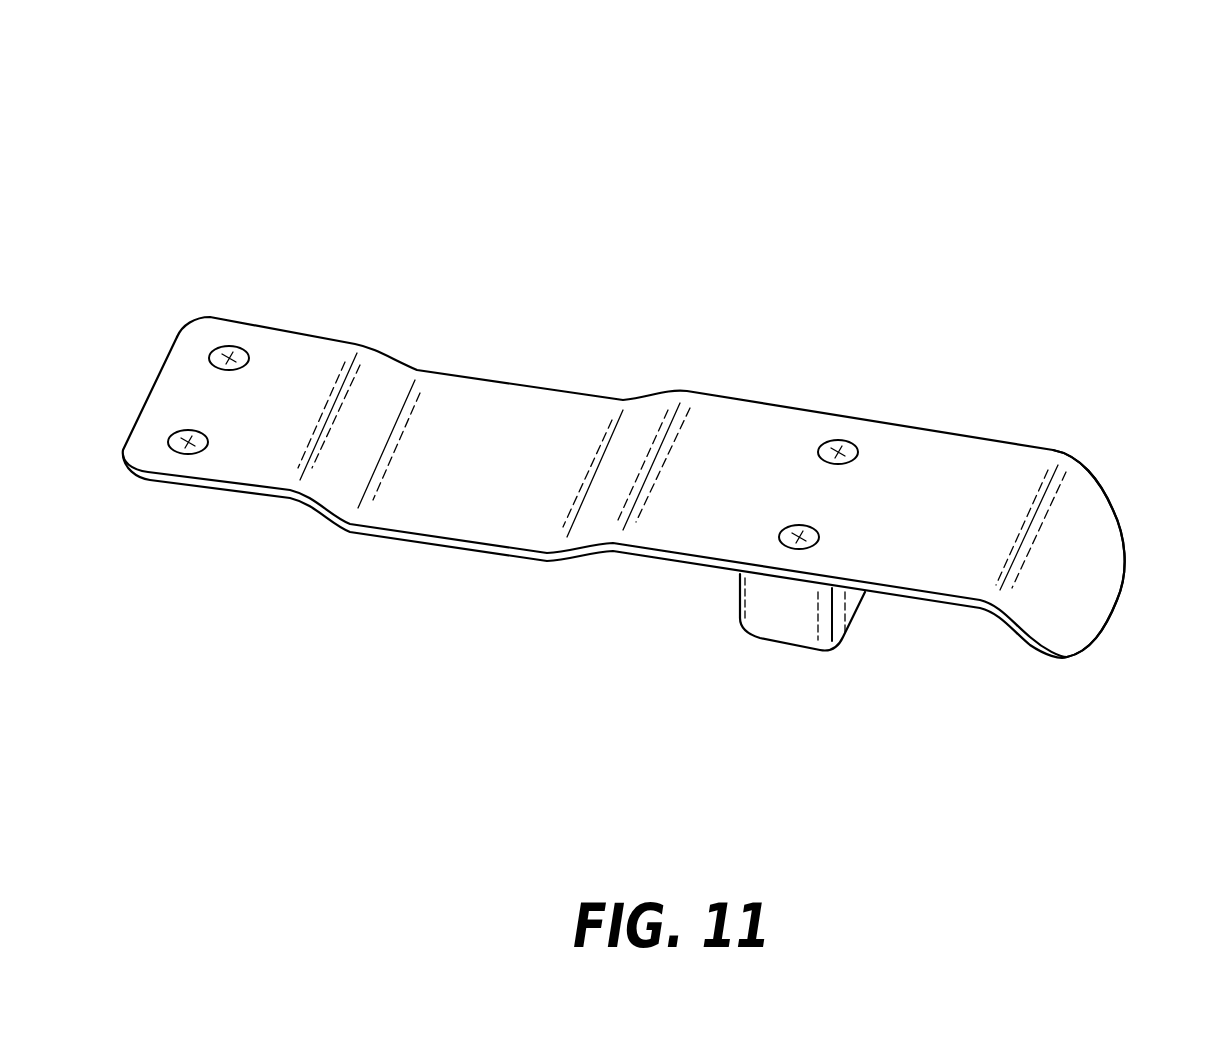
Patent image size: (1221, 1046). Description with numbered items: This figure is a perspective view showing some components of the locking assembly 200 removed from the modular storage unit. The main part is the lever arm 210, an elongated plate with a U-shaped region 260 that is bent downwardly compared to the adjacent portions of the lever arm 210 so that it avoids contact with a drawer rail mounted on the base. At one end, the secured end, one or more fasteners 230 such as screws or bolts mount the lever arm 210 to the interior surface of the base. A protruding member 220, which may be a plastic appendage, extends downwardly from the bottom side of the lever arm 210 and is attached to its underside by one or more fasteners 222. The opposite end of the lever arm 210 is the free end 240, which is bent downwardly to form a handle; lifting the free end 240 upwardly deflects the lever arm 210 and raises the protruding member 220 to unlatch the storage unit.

The locking assembly 200 is at (182, 105).
The lever arm 210 is at (728, 423).
The protruding member 220 is at (848, 636).
The fasteners 222 is at (848, 447).
The fasteners 230 is at (176, 443).
The free end 240 is at (1090, 620).
The U-shaped region 260 is at (430, 573).